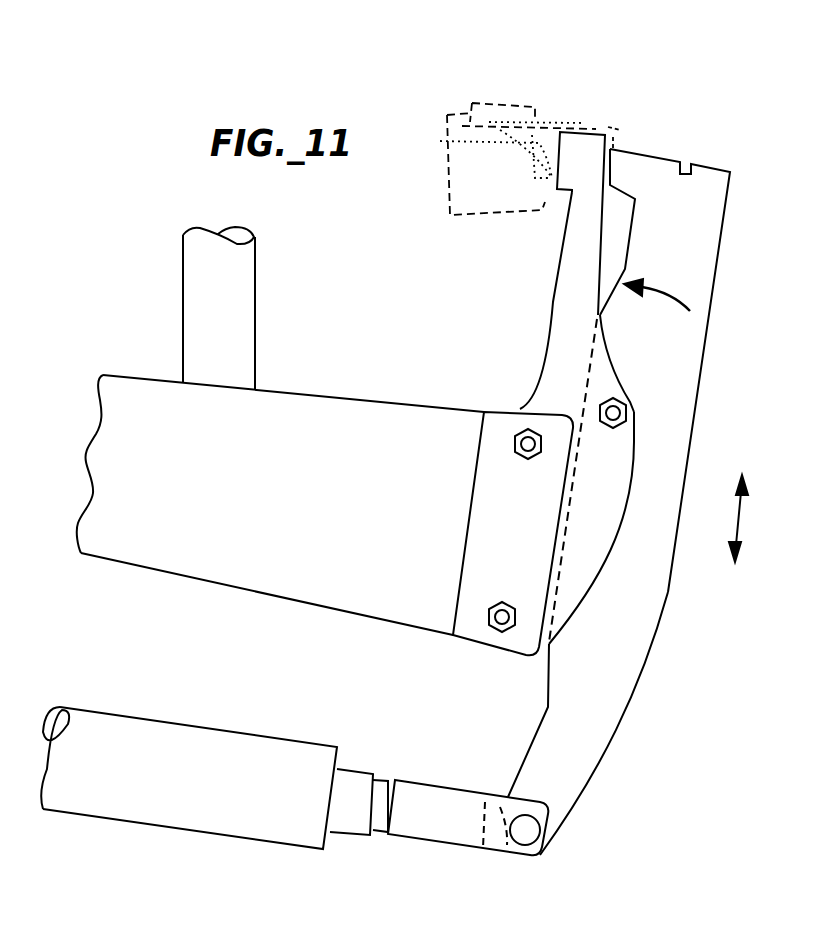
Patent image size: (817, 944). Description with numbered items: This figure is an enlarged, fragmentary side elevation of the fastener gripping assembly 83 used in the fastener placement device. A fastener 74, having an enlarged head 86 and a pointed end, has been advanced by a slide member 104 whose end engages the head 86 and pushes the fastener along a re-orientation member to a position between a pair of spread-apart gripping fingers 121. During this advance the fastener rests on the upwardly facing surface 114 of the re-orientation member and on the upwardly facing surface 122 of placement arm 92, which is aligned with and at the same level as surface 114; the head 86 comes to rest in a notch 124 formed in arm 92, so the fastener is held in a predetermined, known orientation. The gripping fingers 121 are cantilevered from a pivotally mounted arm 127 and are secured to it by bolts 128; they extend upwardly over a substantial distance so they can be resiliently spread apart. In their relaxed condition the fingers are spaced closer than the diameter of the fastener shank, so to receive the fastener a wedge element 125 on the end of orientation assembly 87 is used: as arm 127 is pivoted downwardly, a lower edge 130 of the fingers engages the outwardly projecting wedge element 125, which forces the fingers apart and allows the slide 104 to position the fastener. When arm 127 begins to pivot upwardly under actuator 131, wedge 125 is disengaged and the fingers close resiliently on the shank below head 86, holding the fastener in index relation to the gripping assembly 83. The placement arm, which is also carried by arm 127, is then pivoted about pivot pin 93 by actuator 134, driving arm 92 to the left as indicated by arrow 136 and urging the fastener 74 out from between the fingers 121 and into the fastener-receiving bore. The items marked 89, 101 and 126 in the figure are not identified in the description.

The fastener 74 is at (556, 110).
The gripping assembly 83 is at (672, 705).
The enlarged head 86 is at (620, 137).
The orientation assembly 87 is at (466, 222).
The direction of movement 89 is at (740, 515).
The placement arm 92 is at (718, 212).
The pivot pin 93 is at (625, 406).
The housing 101 is at (495, 126).
The slide member 104 is at (537, 110).
The upwardly facing surface 114 is at (464, 125).
The gripping fingers 121 is at (586, 158).
The upwardly facing surface 122 is at (655, 152).
The notch 124 is at (685, 157).
The wedge element 125 is at (476, 154).
The upper edge 126 is at (575, 127).
The pivotally mounted arm 127 is at (300, 400).
The bolts 128 is at (525, 430).
The lower edge 130 is at (560, 190).
The actuator 131 is at (188, 268).
The actuator 134 is at (223, 730).
The arrow 136 is at (670, 284).